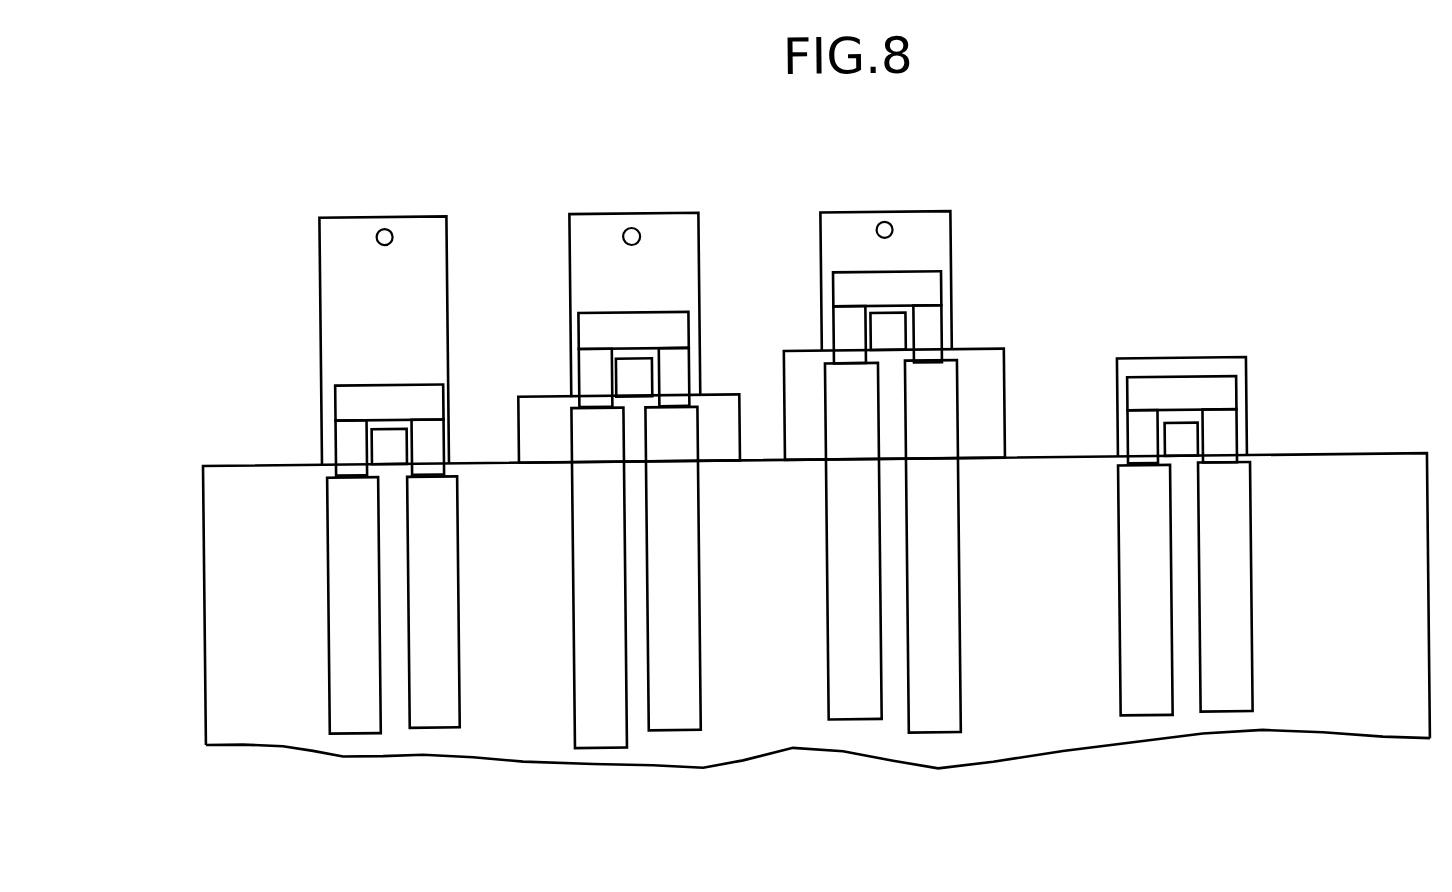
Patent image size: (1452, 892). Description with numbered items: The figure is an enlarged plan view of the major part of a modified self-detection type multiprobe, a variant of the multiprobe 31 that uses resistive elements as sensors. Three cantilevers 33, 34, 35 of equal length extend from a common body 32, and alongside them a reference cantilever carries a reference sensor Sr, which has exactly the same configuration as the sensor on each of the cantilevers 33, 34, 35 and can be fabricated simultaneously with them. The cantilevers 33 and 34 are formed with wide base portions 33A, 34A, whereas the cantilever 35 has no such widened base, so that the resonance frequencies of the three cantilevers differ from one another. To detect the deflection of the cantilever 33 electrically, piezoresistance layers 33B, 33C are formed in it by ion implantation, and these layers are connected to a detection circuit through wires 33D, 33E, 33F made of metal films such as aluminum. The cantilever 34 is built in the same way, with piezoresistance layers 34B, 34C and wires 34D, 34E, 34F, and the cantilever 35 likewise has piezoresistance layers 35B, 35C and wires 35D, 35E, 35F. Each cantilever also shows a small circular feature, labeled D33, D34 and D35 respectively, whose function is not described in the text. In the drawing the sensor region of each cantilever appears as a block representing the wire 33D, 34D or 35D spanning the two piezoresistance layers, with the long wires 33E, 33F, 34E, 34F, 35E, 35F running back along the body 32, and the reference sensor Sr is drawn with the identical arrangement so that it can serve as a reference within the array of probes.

The multiprobe 31 is at (992, 158).
The body 32 is at (1367, 472).
The cantilever 33 is at (930, 228).
The positioning hole of element board 33 D33 is at (883, 229).
The wide base portion 33A is at (997, 396).
The piezoresistance layer 33B is at (940, 335).
The piezoresistance layer 33C is at (845, 330).
The wire 33D is at (927, 291).
The wire 33E is at (945, 730).
The wire 33F is at (842, 707).
The cantilever 34 is at (672, 225).
The positioning hole of element board 34 D34 is at (627, 232).
The wide base portion 34A is at (725, 410).
The piezoresistance layer 34B is at (670, 372).
The piezoresistance layer 34C is at (595, 381).
The wire 34D is at (598, 336).
The wire 34E is at (660, 725).
The wire 34F is at (596, 731).
The cantilever 35 is at (427, 227).
The positioning hole of element board 35 D35 is at (385, 230).
The piezoresistance layer 35B is at (428, 443).
The piezoresistance layer 35C is at (348, 434).
The wire 35D is at (370, 395).
The wire 35E is at (428, 719).
The wire 35F is at (348, 707).
The reference sensor Sr is at (1256, 441).